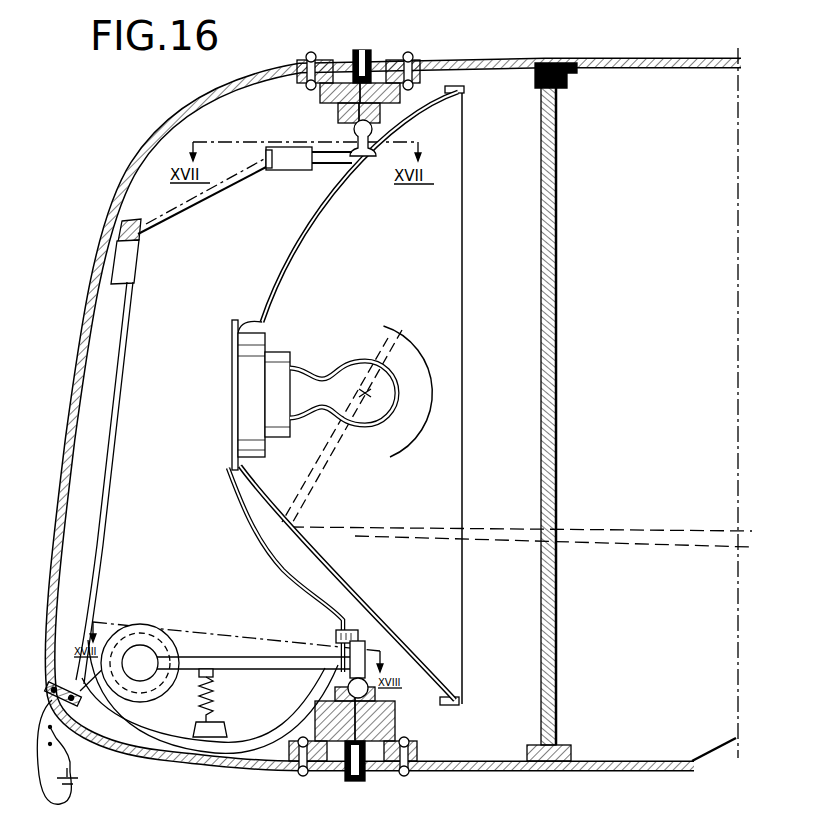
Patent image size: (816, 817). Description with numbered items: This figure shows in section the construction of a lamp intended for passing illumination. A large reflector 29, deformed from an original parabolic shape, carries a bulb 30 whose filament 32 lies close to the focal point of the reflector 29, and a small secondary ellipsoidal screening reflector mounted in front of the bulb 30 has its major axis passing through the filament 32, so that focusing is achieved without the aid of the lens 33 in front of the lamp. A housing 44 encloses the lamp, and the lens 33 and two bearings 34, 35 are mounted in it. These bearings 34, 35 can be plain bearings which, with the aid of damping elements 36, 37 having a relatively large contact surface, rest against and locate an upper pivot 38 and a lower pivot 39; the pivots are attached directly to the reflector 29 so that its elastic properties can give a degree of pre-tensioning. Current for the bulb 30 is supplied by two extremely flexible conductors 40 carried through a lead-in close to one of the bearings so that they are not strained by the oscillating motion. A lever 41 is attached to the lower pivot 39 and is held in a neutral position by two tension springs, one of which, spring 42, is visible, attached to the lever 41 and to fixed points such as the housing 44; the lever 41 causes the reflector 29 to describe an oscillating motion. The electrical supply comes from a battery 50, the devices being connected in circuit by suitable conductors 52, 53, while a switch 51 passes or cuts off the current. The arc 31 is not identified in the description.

The reflector 29 is at (295, 262).
The bulb 30 is at (323, 357).
The lamp bulb 31 is at (426, 352).
The filament 32 is at (369, 388).
The lens 33 is at (548, 395).
The bearing 34 is at (372, 93).
The bearing 35 is at (372, 744).
The damping element 36 is at (347, 90).
The damping element 37 is at (339, 744).
The upper pivot 38 is at (349, 133).
The lower pivot 39 is at (355, 662).
The flexible conductors 40 is at (250, 522).
The lever 41 is at (211, 660).
The tension spring 42 is at (217, 697).
The housing 44 is at (160, 152).
The battery 50 is at (77, 781).
The switch 51 is at (60, 741).
The conductor 52 is at (110, 397).
The conductor 53 is at (113, 436).